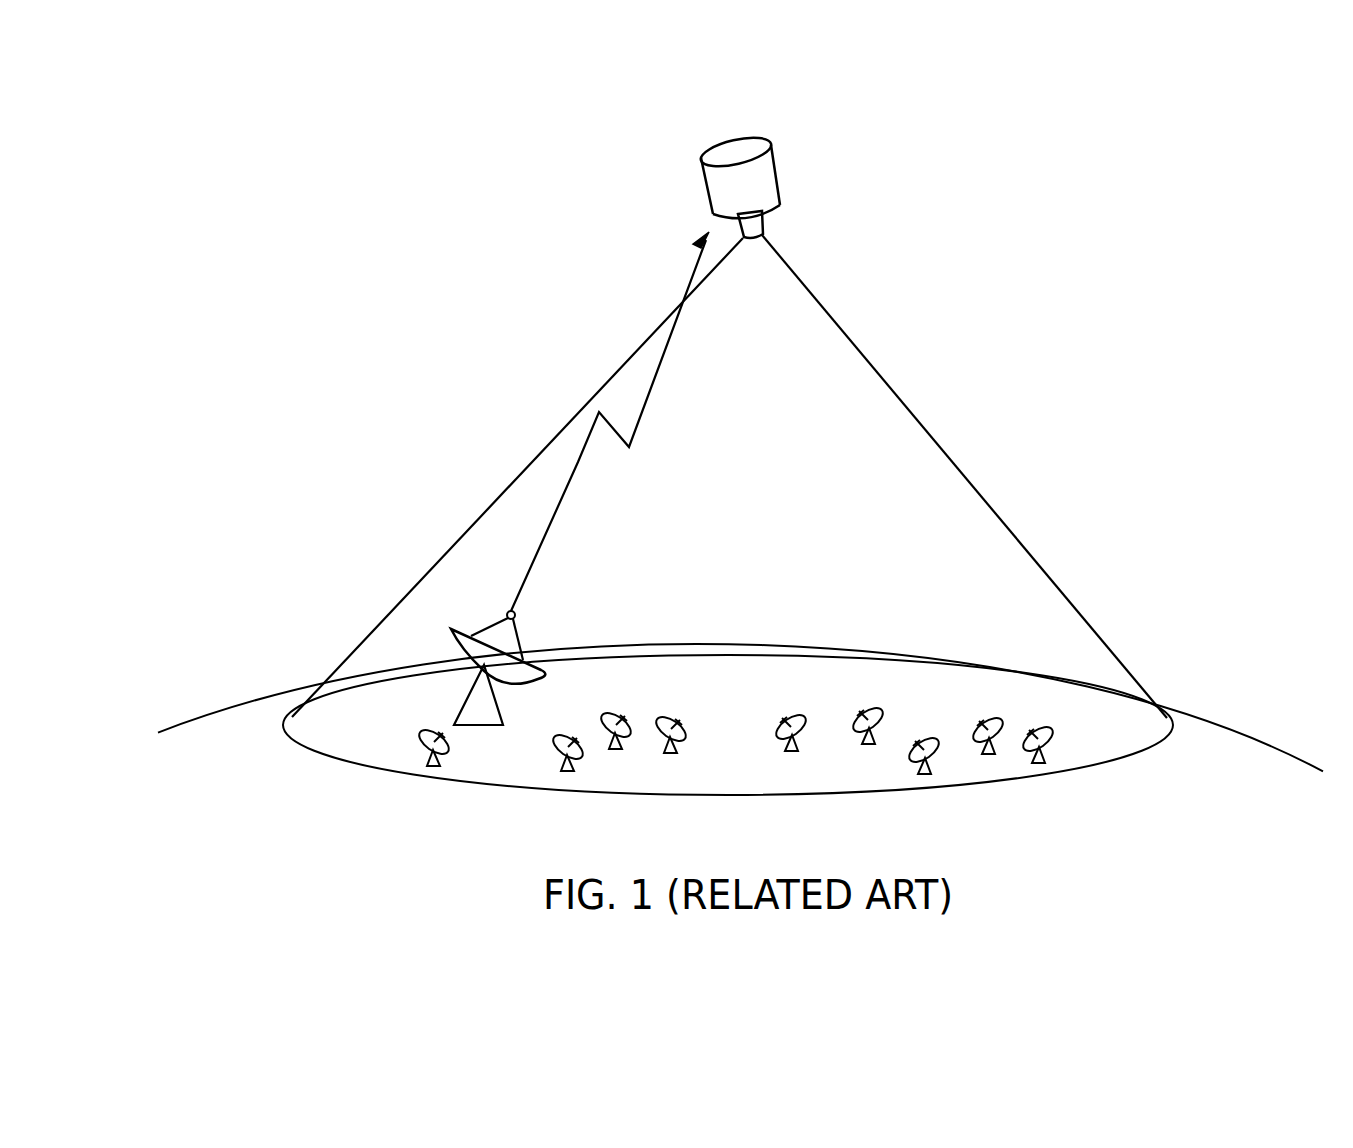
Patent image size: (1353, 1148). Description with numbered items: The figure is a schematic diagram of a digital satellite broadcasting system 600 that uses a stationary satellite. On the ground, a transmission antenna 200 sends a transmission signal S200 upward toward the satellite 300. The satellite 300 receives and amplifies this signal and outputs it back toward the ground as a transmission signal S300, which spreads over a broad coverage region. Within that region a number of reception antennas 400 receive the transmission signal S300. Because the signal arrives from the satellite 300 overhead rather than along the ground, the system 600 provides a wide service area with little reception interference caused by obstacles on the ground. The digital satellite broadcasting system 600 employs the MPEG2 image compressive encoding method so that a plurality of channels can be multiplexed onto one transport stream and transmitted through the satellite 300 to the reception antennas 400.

The satellite 300 is at (795, 155).
The transmission signal S300 is at (880, 371).
The transmission signal S200 is at (532, 561).
The transmission antenna 200 is at (517, 648).
The reception antennas 400 is at (423, 731).
The digital satellite broadcasting system 600 is at (1168, 814).